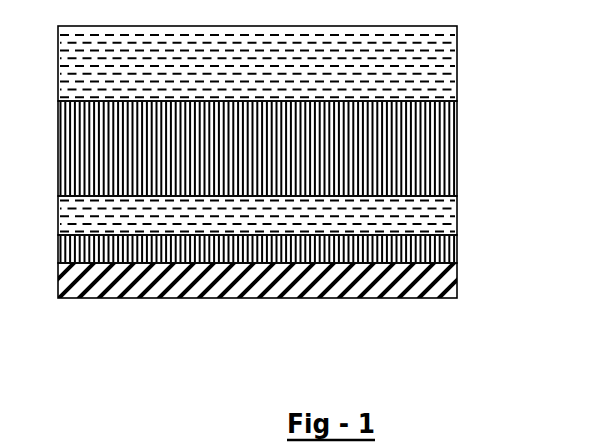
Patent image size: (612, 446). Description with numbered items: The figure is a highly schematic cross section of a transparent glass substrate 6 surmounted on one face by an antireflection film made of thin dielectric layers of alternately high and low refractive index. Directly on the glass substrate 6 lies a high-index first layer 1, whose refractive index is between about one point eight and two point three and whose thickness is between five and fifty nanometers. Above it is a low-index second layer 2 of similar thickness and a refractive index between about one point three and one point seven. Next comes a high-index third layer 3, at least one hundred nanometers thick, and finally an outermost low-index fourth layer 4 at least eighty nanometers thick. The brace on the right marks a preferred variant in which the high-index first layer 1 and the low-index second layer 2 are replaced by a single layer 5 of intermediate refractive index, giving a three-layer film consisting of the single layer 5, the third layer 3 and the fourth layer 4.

The high-index first layer 1 is at (470, 252).
The low-index second layer 2 is at (469, 215).
The high-index third layer 3 is at (470, 140).
The low-index fourth layer 4 is at (470, 69).
The single intermediate-index layer 5 is at (557, 190).
The glass substrate 6 is at (470, 285).